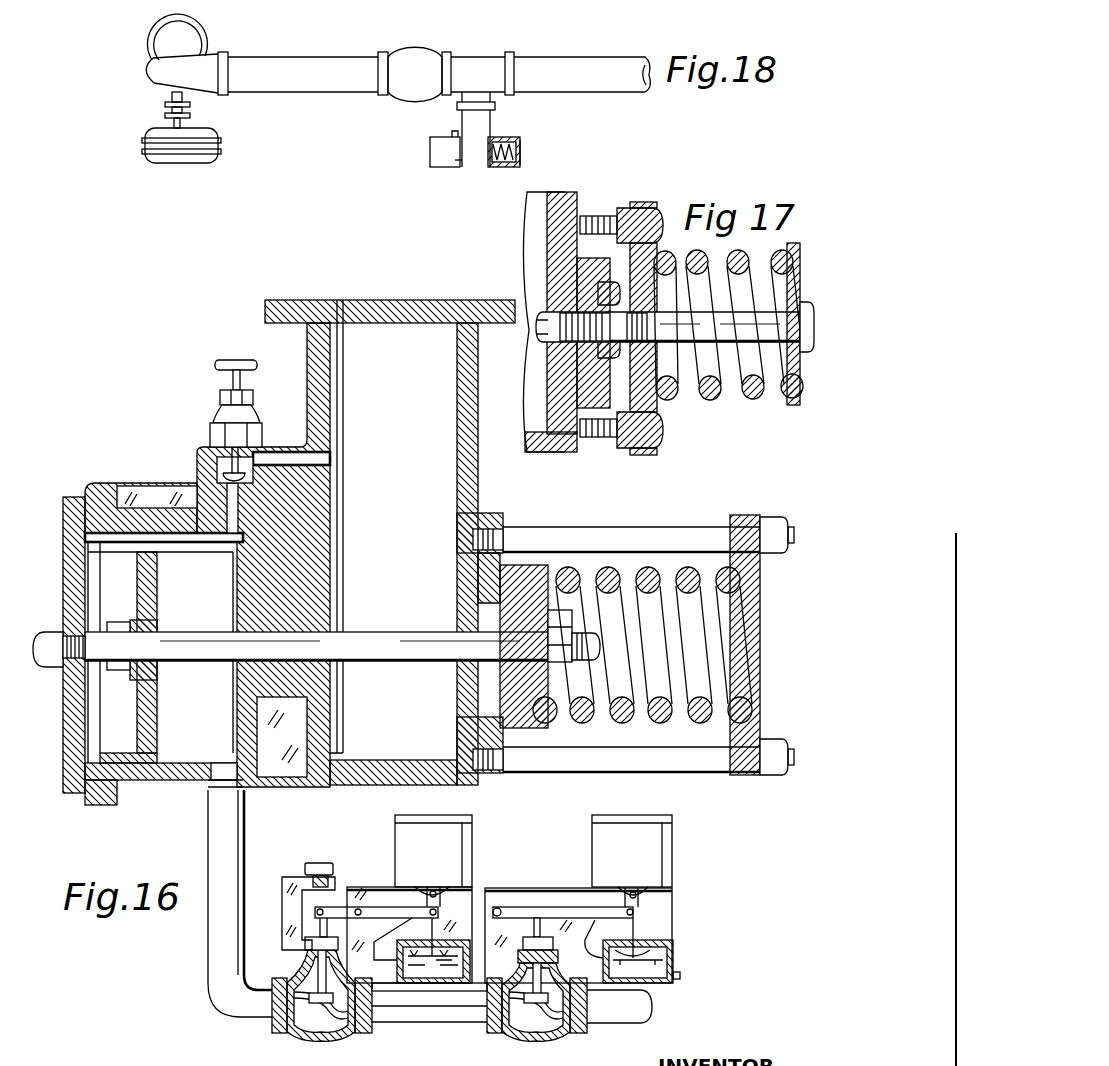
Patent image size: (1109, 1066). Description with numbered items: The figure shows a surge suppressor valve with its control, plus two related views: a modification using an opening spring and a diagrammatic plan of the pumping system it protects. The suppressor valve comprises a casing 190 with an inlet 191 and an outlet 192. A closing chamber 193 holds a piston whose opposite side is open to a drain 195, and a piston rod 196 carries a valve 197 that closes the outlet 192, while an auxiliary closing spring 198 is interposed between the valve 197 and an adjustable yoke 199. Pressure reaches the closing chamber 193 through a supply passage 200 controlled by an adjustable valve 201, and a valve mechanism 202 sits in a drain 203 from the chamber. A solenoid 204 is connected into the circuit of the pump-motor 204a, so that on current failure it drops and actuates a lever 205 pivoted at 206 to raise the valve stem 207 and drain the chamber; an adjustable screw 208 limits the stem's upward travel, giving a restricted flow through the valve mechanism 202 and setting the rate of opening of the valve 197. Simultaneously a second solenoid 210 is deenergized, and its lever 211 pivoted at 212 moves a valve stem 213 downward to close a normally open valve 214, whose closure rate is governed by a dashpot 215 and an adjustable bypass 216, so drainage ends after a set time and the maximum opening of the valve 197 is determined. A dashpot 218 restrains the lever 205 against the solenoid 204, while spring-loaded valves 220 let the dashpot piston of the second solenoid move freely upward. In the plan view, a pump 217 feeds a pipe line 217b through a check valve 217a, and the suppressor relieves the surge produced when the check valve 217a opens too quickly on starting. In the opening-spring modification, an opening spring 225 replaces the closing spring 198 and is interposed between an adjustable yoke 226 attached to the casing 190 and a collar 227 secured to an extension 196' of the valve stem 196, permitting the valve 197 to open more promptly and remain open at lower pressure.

In FIG. 18, the casing 190 is at (462, 128).
In FIG. 17, the casing 190 is at (547, 452).
In FIG. 16, the casing 190 is at (315, 377).
In FIG. 16, the inlet 191 is at (403, 310).
In FIG. 16, the outlet 192 is at (492, 595).
In FIG. 16, the closing chamber 193 is at (183, 530).
In FIG. 16, the drain 195 is at (52, 637).
In FIG. 17, the piston rod 196 is at (522, 341).
In FIG. 16, the piston rod 196 is at (328, 626).
In FIG. 17, the extension of the valve stem 196' is at (668, 286).
In FIG. 16, the valve 197 is at (500, 683).
In FIG. 18, the auxiliary closing spring 198 is at (500, 136).
In FIG. 16, the auxiliary closing spring 198 is at (608, 567).
In FIG. 18, the adjustable yoke 199 is at (522, 150).
In FIG. 16, the adjustable yoke 199 is at (753, 620).
In FIG. 16, the supply passage 200 is at (331, 453).
In FIG. 16, the adjustable valve 201 is at (214, 462).
In FIG. 16, the valve mechanism 202 is at (348, 1040).
In FIG. 16, the drain 203 is at (223, 838).
In FIG. 16, the solenoid 204 is at (472, 838).
In FIG. 18, the pump-motor 204a is at (207, 133).
In FIG. 16, the lever 205 is at (387, 910).
In FIG. 16, the pivot 206 is at (358, 908).
In FIG. 16, the valve stem 207 is at (302, 925).
In FIG. 16, the adjustable screw 208 is at (321, 862).
In FIG. 16, the second solenoid 210 is at (660, 843).
In FIG. 16, the lever 211 is at (575, 908).
In FIG. 16, the pivot 212 is at (498, 906).
In FIG. 16, the valve stem 213 is at (524, 915).
In FIG. 16, the normally open valve 214 is at (560, 1033).
In FIG. 16, the dashpot 215 is at (653, 984).
In FIG. 16, the adjustable bypass 216 is at (668, 967).
In FIG. 18, the pump 217 is at (205, 60).
In FIG. 16, the pump 217 is at (417, 947).
In FIG. 18, the check valve 217a is at (413, 62).
In FIG. 18, the pipe line 217b is at (576, 65).
In FIG. 16, the dashpot 218 is at (435, 985).
In FIG. 16, the spring-loaded valves 220 is at (647, 938).
In FIG. 17, the opening spring 225 is at (750, 398).
In FIG. 17, the adjustable yoke 226 is at (660, 405).
In FIG. 17, the collar 227 is at (793, 410).